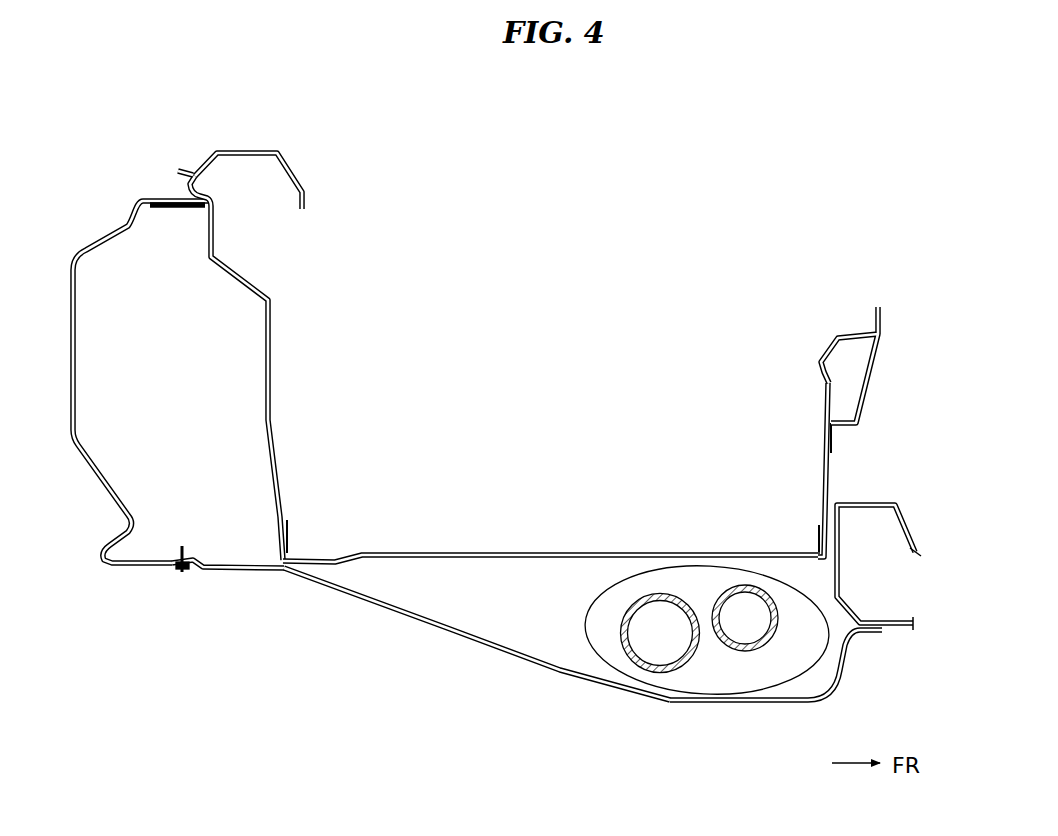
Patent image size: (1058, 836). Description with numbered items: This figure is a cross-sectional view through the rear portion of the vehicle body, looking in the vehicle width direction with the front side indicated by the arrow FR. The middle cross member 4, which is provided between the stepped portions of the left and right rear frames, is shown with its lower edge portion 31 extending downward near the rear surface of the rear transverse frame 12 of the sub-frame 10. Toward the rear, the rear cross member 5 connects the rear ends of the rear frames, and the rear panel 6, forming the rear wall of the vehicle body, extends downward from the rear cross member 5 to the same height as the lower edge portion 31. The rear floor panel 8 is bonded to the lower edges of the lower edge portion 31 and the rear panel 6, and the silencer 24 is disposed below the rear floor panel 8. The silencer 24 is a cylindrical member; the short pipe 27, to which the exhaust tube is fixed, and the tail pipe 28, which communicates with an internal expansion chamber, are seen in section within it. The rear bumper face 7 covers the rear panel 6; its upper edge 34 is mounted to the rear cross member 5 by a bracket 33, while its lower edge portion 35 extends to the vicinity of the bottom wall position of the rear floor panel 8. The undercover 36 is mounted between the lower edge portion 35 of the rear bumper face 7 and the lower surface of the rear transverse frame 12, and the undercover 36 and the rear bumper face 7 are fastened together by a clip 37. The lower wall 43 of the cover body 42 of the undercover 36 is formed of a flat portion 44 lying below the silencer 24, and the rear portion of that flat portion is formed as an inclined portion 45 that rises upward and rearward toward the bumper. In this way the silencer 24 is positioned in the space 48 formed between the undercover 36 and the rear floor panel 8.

The middle cross member 4 is at (873, 387).
The rear cross member 5 is at (303, 172).
The rear panel 6 is at (265, 402).
The rear bumper face 7 is at (141, 353).
The rear floor panel 8 is at (462, 553).
The sub-frame 10 is at (863, 503).
The rear transverse frame 12 is at (882, 539).
The silencer 24 is at (659, 605).
The short pipe 27 is at (737, 587).
The tail pipe 28 is at (667, 596).
The lower edge portion 31 is at (822, 460).
The bracket 33 is at (175, 207).
The upper edge 34 is at (163, 196).
The lower edge portion 35 is at (150, 557).
The undercover 36 is at (589, 690).
The clip 37 is at (190, 547).
The cover body 42 is at (611, 727).
The lower wall 43 is at (583, 675).
The flat portion 44 is at (708, 708).
The inclined portion 45 is at (480, 646).
The space 48 is at (456, 607).